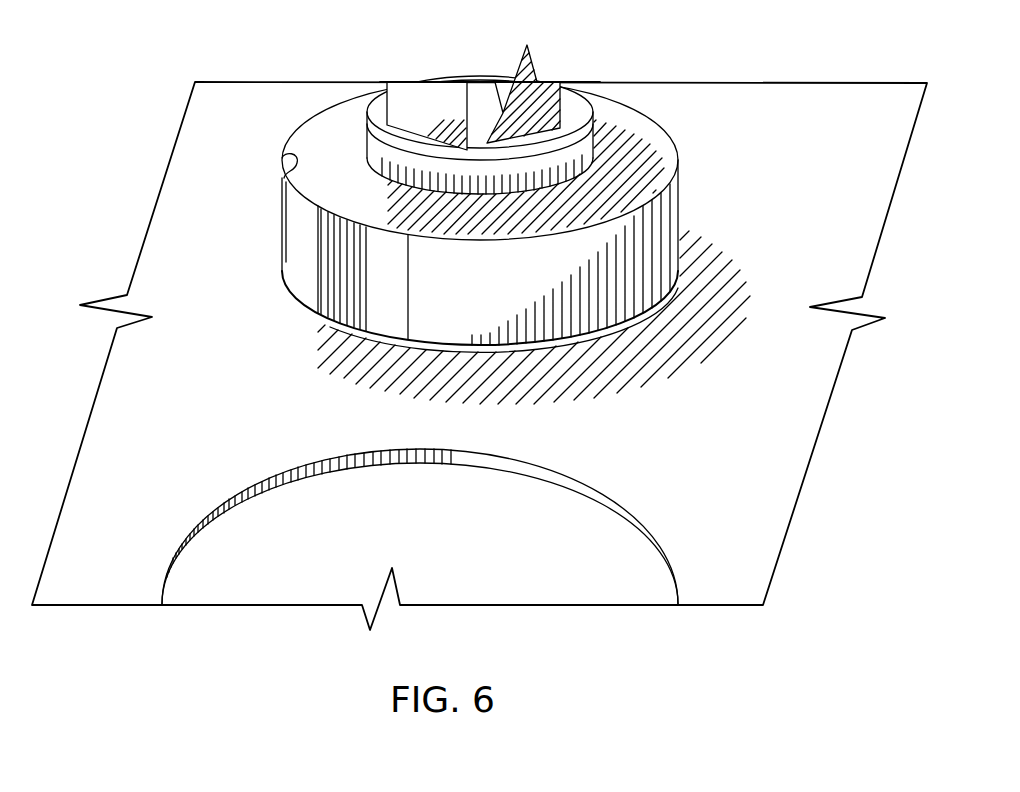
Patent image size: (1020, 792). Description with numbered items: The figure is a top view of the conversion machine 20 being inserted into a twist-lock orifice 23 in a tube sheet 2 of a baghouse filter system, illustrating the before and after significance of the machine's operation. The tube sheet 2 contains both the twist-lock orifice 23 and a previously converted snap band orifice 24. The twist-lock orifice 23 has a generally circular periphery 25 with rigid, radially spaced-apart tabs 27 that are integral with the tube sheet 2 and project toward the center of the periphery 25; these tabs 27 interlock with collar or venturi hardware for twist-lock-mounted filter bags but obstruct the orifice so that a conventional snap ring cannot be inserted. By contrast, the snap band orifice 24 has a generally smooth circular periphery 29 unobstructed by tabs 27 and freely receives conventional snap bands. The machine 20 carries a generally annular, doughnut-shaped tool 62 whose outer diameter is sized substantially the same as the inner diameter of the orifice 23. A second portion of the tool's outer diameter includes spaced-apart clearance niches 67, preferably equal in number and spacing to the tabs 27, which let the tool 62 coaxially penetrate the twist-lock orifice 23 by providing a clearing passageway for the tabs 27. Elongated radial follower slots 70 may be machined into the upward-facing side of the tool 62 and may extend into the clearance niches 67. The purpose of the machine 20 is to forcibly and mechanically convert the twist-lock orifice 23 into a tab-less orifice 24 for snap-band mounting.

The tube sheet 2 is at (187, 440).
The conversion machine 20 is at (299, 120).
The twist lock orifice 23 is at (466, 356).
The snap band orifice 24 is at (587, 527).
The circular periphery 25 is at (623, 332).
The tabs 27 is at (347, 318).
The circular periphery 29 is at (498, 464).
The tool 62 is at (298, 238).
The clearance niches 67 is at (332, 275).
The follower slots 70 is at (288, 163).